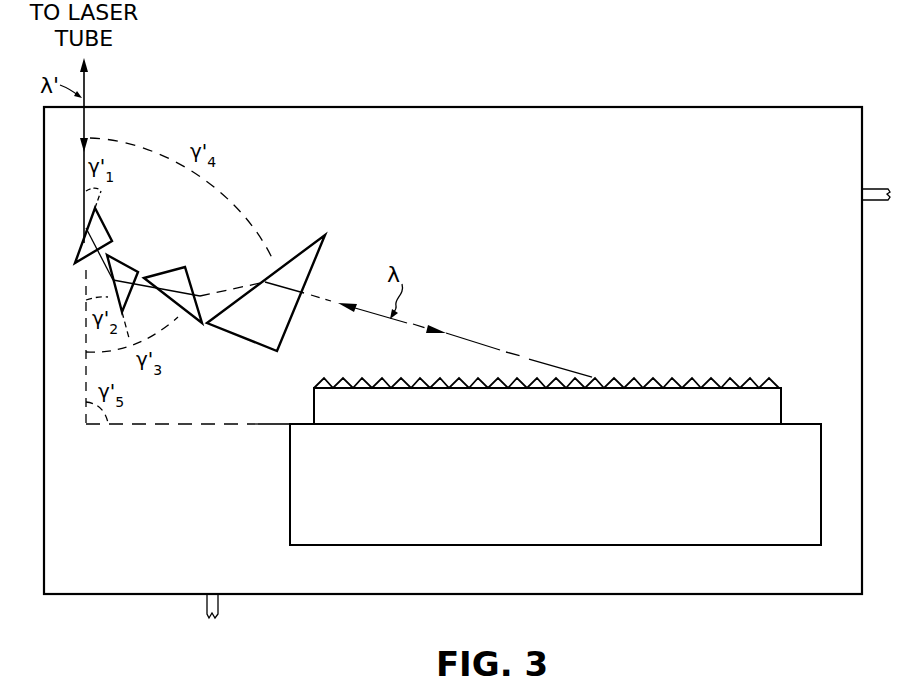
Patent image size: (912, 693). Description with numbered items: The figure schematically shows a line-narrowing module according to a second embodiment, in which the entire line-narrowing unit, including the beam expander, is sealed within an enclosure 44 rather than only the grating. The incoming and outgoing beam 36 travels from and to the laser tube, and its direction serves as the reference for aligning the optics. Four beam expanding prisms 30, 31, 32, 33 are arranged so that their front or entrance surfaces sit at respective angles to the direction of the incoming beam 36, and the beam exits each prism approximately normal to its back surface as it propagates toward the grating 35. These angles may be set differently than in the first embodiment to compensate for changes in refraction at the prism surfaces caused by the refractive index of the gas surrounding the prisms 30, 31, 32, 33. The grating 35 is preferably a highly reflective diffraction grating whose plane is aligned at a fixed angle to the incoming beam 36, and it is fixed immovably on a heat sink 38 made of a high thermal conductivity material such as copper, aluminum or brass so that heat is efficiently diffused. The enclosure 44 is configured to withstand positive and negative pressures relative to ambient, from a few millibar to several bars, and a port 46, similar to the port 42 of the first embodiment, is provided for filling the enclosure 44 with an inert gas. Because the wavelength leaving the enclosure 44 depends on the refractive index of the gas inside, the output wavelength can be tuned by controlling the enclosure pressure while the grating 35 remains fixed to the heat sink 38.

The prism 30 is at (105, 228).
The prism 31 is at (128, 255).
The prism 32 is at (172, 267).
The prism 33 is at (302, 252).
The grating 35 is at (716, 377).
The incoming beam 36 is at (82, 128).
The heat sink 38 is at (822, 522).
The port 42 is at (873, 188).
The enclosure 44 is at (327, 595).
The port 46 is at (207, 612).